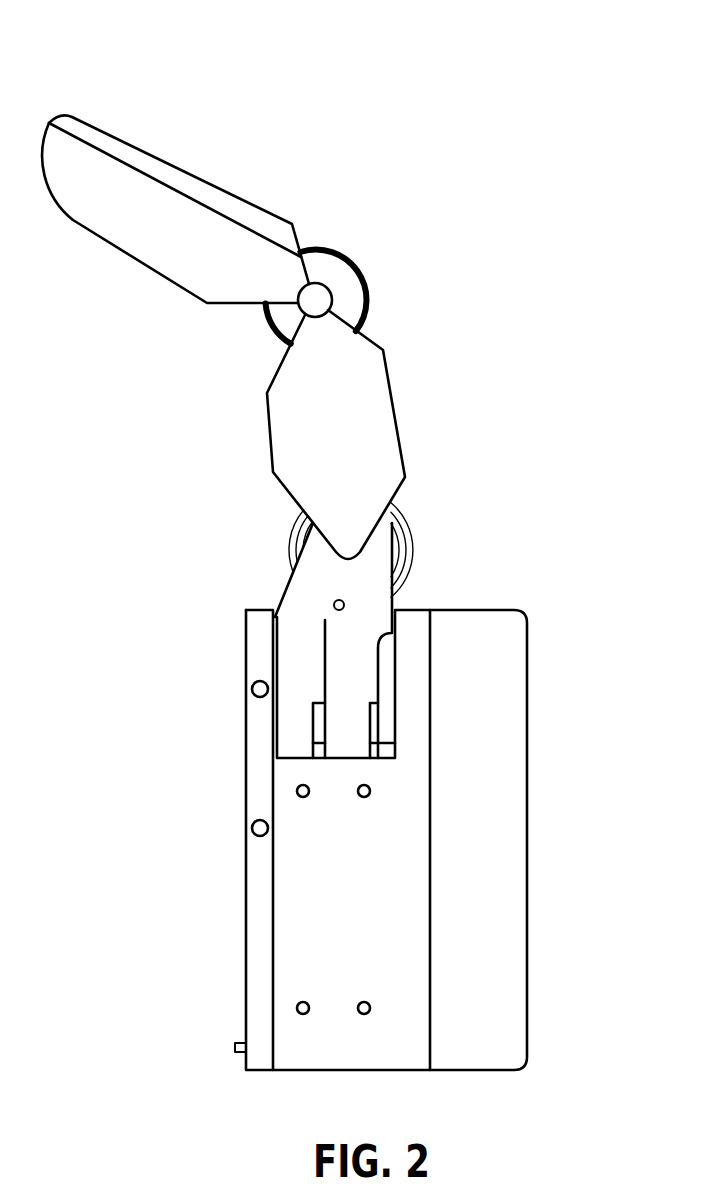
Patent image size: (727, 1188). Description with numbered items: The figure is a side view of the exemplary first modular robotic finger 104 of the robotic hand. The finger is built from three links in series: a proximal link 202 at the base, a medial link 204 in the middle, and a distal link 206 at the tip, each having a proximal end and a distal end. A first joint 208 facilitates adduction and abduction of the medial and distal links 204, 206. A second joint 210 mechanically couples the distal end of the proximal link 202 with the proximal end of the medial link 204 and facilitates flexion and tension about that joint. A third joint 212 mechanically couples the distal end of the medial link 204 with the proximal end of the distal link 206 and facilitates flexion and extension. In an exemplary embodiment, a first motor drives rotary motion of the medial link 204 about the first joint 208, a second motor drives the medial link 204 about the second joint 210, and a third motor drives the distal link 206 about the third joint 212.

The first modular robotic finger 104 is at (192, 103).
The proximal link 202 is at (527, 750).
The medial link 204 is at (383, 390).
The distal link 206 is at (157, 153).
The first joint 208 is at (247, 730).
The second joint 210 is at (413, 532).
The third joint 212 is at (368, 300).